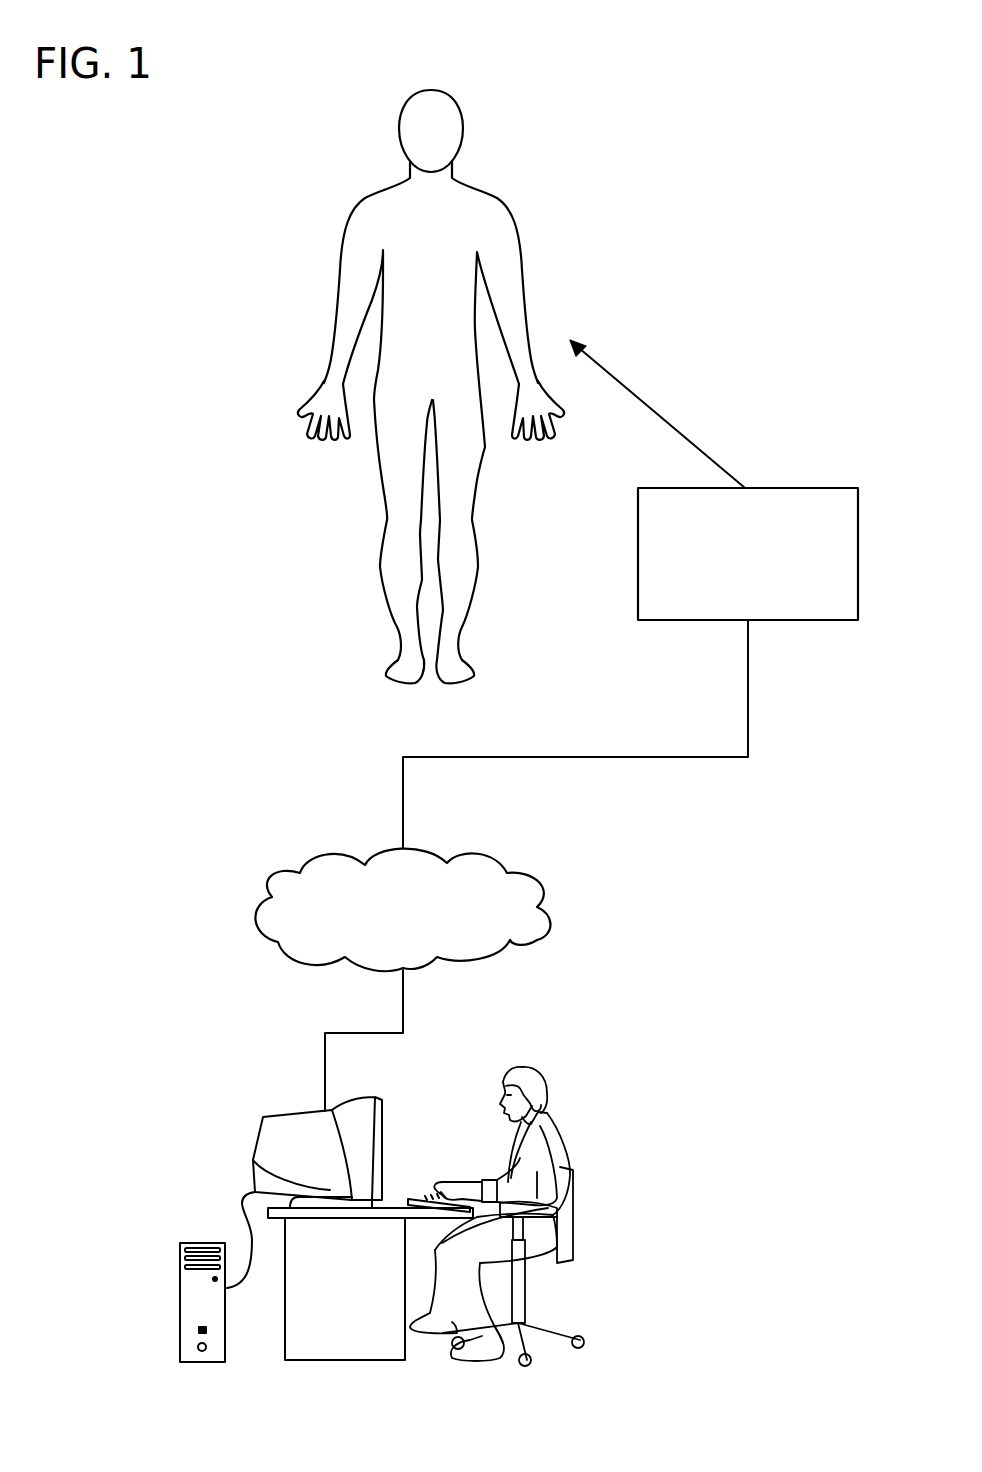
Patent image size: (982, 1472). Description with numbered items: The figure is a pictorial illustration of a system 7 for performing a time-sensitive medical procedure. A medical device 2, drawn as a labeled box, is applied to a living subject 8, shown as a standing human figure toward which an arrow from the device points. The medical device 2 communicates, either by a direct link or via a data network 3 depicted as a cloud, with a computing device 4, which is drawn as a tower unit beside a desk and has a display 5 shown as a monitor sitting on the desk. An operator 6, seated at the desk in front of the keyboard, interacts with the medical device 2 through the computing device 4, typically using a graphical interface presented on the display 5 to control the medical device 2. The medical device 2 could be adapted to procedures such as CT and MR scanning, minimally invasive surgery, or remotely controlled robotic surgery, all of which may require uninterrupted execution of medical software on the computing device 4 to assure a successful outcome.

The living subject 8 is at (340, 260).
The medical device 2 is at (797, 488).
The data network 3 is at (550, 917).
The system 7 is at (203, 1073).
The computing device 4 is at (180, 1287).
The display 5 is at (383, 1120).
The operator 6 is at (547, 1083).